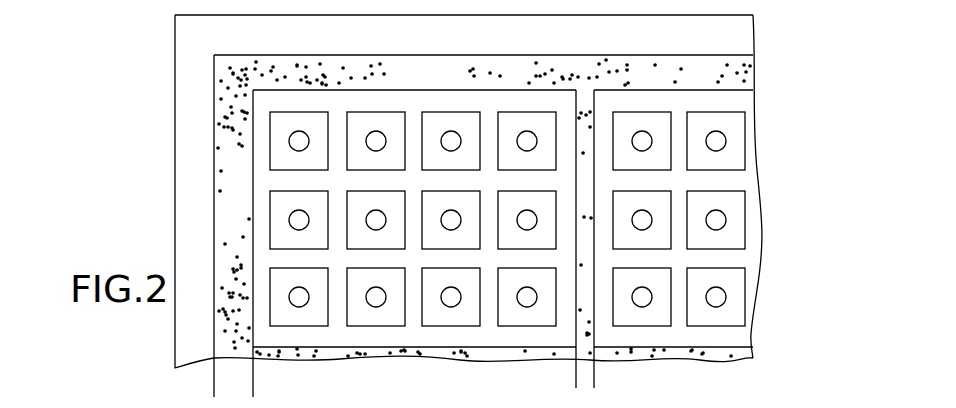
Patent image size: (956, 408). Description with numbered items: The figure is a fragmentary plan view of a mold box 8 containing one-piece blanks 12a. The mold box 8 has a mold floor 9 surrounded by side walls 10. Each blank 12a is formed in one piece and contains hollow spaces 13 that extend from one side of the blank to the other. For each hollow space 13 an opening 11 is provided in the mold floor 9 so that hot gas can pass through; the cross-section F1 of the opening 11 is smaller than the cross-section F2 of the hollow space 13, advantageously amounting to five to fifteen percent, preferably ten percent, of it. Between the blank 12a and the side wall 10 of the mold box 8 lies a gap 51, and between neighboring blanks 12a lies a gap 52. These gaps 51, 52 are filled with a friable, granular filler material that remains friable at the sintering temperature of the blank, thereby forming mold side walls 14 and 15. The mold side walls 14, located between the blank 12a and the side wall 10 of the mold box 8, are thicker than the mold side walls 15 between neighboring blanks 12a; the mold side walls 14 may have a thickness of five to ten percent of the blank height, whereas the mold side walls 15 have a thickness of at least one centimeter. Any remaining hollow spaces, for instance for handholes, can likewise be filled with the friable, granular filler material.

The mold box 8 is at (768, 27).
The mold floor 9 is at (730, 116).
The side walls 10 is at (426, 40).
The openings 11 is at (717, 216).
The blanks 12a is at (768, 245).
The hollow spaces 13 is at (717, 168).
The mold side walls 14 is at (730, 70).
The mold side walls 15 is at (583, 100).
The gap 51 is at (287, 385).
The gap 52 is at (627, 381).
The cross-section of the opening F1 is at (718, 296).
The cross-section of the hollow space F2 is at (733, 275).